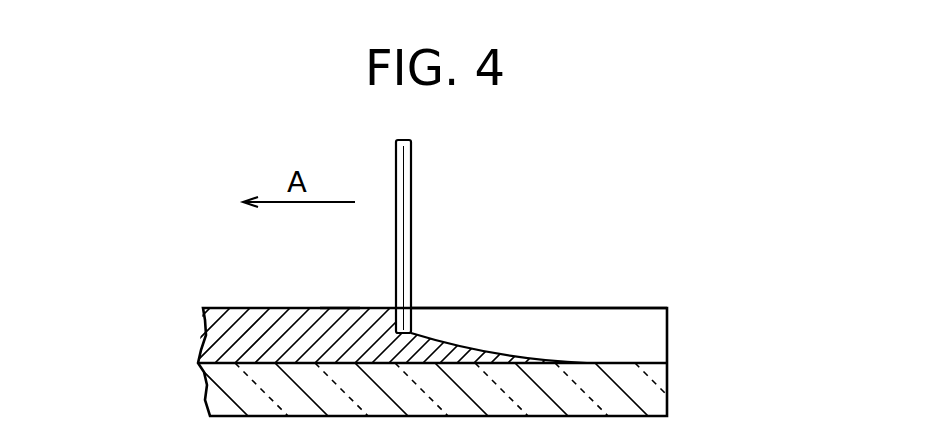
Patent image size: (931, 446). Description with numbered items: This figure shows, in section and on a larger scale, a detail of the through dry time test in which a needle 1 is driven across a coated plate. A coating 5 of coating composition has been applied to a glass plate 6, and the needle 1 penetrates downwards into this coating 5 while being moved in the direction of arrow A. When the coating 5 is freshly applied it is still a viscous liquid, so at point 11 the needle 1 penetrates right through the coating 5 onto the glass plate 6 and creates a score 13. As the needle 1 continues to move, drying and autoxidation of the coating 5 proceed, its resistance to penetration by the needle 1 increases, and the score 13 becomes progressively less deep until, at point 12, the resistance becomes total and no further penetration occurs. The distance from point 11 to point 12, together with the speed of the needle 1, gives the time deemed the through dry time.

The needle 1 is at (411, 196).
The coating 5 is at (205, 328).
The glass plate 6 is at (205, 390).
The point 11 is at (667, 308).
The point 12 is at (340, 308).
The score 13 is at (605, 308).